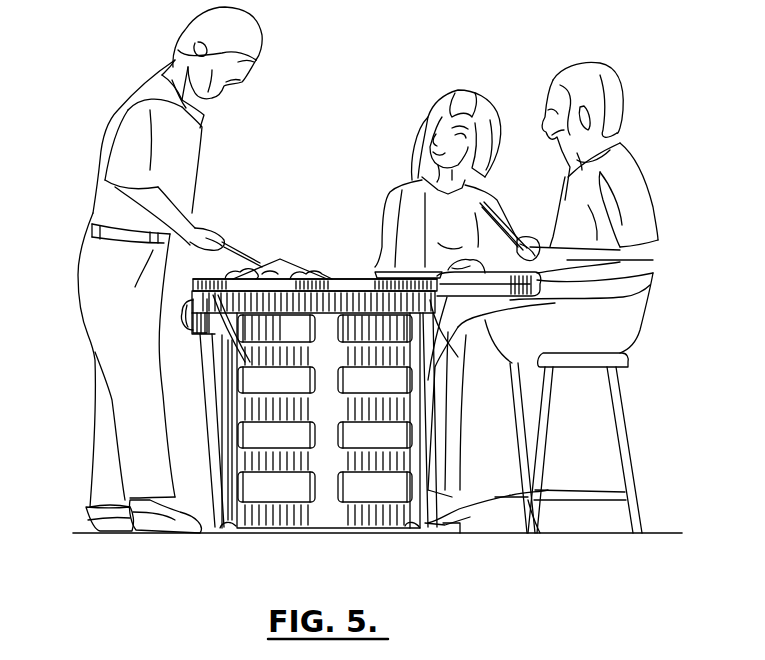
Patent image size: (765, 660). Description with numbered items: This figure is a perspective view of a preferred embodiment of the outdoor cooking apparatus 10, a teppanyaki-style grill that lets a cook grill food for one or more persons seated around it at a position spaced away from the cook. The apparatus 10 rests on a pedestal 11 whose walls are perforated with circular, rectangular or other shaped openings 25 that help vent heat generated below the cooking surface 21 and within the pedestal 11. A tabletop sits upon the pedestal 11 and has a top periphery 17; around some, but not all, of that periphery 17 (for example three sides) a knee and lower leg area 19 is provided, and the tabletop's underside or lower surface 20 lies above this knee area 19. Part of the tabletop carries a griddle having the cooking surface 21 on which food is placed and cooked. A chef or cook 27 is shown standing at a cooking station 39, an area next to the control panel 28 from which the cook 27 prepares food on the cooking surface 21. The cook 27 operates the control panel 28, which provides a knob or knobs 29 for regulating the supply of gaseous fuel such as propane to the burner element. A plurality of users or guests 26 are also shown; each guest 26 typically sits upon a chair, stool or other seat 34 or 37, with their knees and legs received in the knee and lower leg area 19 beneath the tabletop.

The outdoor cooking apparatus 10 is at (577, 46).
The pedestal 11 is at (323, 470).
The top periphery 17 is at (350, 286).
The knee and lower leg area 19 is at (470, 322).
The underside or lower surface 20 is at (482, 298).
The cooking surface 21 is at (343, 283).
The openings 25 is at (360, 327).
The users or guests 26 is at (483, 106).
The cook or chef 27 is at (118, 113).
The control panel 28 is at (203, 334).
The knob 29 is at (182, 312).
The seat 34 is at (458, 515).
The seat 37 is at (636, 473).
The cooking station 39 is at (180, 446).